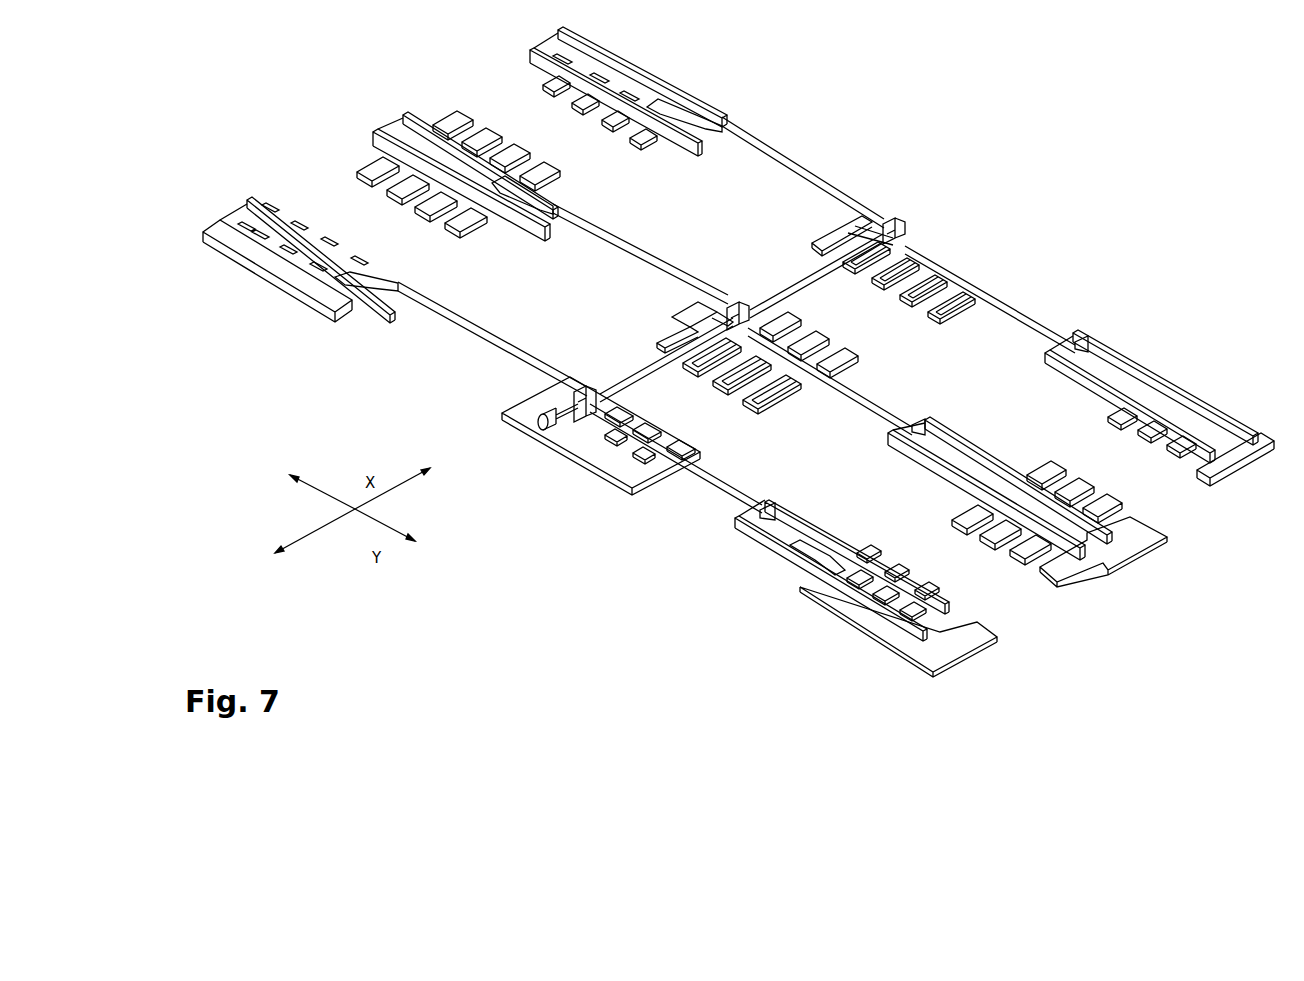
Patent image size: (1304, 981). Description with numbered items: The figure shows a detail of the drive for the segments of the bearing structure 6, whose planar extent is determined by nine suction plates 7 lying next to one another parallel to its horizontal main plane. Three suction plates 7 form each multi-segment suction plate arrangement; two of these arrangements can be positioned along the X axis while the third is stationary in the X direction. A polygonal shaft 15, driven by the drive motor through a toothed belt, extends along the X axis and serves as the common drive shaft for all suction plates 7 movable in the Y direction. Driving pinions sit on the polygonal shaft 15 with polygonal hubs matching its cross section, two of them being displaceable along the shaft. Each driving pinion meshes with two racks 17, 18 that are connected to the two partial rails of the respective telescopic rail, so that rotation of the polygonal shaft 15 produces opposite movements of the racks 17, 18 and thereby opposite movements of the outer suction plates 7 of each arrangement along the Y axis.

The bearing structure 6 is at (857, 181).
The suction plate 7 is at (576, 112).
The polygonal shaft 15 is at (573, 413).
The rack 17 is at (803, 181).
The rack 18 is at (707, 491).